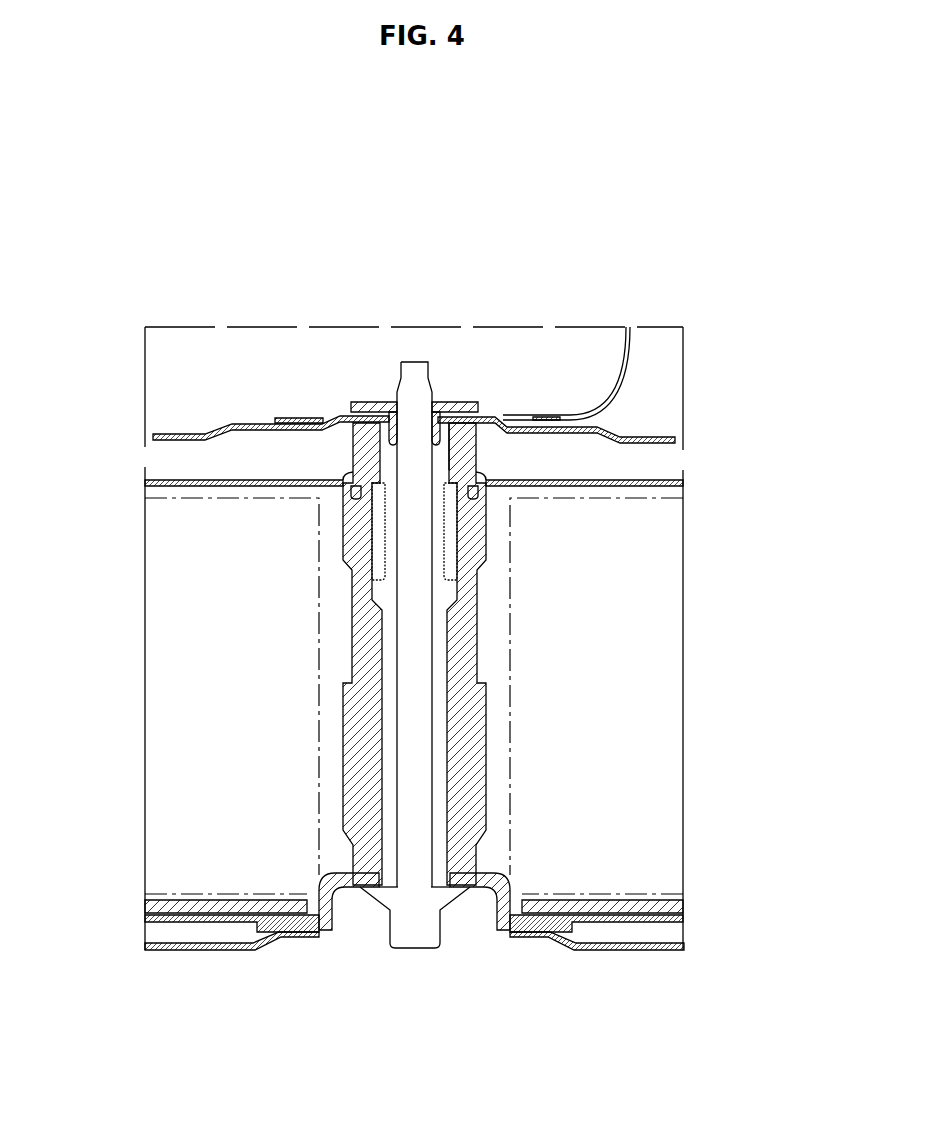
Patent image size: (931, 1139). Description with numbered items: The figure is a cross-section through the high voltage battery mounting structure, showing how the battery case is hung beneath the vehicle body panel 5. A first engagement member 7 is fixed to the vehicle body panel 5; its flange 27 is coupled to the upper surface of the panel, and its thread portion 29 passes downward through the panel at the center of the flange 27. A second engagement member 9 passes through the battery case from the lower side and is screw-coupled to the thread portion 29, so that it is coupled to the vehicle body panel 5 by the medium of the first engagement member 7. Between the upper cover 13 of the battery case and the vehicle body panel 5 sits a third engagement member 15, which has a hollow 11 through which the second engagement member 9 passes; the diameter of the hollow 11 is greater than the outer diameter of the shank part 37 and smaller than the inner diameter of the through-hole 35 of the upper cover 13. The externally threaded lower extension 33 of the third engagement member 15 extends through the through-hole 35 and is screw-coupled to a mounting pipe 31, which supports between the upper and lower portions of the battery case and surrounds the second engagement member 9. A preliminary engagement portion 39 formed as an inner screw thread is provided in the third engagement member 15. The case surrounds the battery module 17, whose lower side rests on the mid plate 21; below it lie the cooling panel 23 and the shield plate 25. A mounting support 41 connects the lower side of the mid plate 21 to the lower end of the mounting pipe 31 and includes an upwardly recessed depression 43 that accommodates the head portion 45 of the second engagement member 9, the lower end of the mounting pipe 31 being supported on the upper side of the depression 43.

The vehicle body panel 5 is at (295, 416).
The first engagement member 7 is at (442, 306).
The second engagement member 9 is at (397, 727).
The hollow 11 is at (448, 464).
The upper cover 13 is at (617, 486).
The third engagement member 15 is at (360, 452).
The battery module 17 is at (322, 690).
The mid plate 21 is at (173, 899).
The cooling panel 23 is at (173, 919).
The shield plate 25 is at (171, 949).
The flange 27 is at (460, 402).
The thread portion 29 is at (498, 423).
The mounting pipe 31 is at (467, 632).
The lower extension 33 is at (383, 579).
The through-hole 35 is at (360, 490).
The shank part 37 is at (414, 828).
The preliminary engagement portion 39 is at (460, 545).
The mounting support 41 is at (484, 924).
The depression 43 is at (348, 898).
The head portion 45 is at (415, 949).